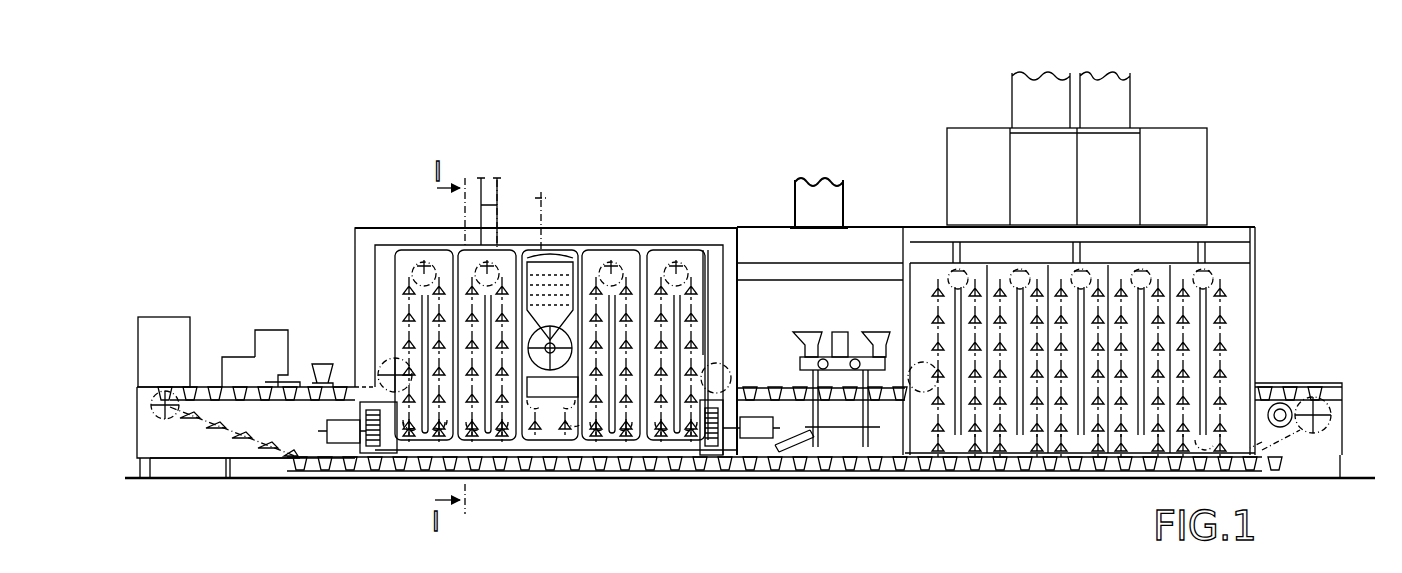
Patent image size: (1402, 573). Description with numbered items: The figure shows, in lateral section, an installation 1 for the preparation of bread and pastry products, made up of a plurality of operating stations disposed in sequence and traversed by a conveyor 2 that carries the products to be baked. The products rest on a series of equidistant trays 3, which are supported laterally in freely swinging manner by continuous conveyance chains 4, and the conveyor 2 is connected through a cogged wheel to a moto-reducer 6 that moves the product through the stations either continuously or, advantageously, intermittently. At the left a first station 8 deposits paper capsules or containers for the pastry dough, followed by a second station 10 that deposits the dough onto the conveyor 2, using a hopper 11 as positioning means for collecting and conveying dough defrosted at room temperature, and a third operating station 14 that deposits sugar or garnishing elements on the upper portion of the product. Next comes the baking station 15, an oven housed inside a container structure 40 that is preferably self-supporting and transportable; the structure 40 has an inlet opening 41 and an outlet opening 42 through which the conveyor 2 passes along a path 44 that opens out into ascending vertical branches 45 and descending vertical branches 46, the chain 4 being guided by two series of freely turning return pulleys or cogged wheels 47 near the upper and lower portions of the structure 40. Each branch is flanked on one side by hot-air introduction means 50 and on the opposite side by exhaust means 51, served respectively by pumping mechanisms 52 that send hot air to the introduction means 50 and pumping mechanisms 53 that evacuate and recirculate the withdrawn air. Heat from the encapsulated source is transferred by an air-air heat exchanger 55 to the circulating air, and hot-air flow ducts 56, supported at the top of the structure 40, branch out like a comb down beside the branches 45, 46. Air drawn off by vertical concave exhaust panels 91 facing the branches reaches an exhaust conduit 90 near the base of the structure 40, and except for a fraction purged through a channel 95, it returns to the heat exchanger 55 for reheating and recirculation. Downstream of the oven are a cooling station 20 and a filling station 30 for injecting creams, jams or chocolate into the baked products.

The installation 1 is at (856, 201).
The conveyor 2 is at (197, 447).
The trays 3 is at (297, 460).
The continuous conveyance chains 4 is at (265, 448).
The moto-reducer 6 is at (1284, 405).
The first station 8 is at (167, 297).
The second station 10 is at (262, 316).
The hopper 11 is at (258, 335).
The third operating station 14 is at (318, 356).
The baking station 15 is at (625, 197).
The cooling station 20 is at (1185, 187).
The filling station 30 is at (849, 311).
The container structure 40 is at (700, 232).
The inlet opening 41 is at (361, 380).
The outlet opening 42 is at (735, 354).
The path 44 is at (381, 300).
The ascending vertical branches 45 is at (594, 285).
The descending vertical branches 46 is at (507, 260).
The return pulleys or cogged wheels 47 is at (542, 196).
The hot-air introduction means 50 is at (385, 274).
The exhaust means 51 is at (413, 437).
The pumping mechanisms 52 is at (546, 443).
The pumping mechanisms 53 is at (386, 445).
The heat exchanger 55 is at (559, 255).
The hot-air flow ducts 56 is at (676, 260).
The exhaust conduit 90 is at (662, 443).
The exhaust panels 91 is at (612, 428).
The channel 95 is at (500, 180).